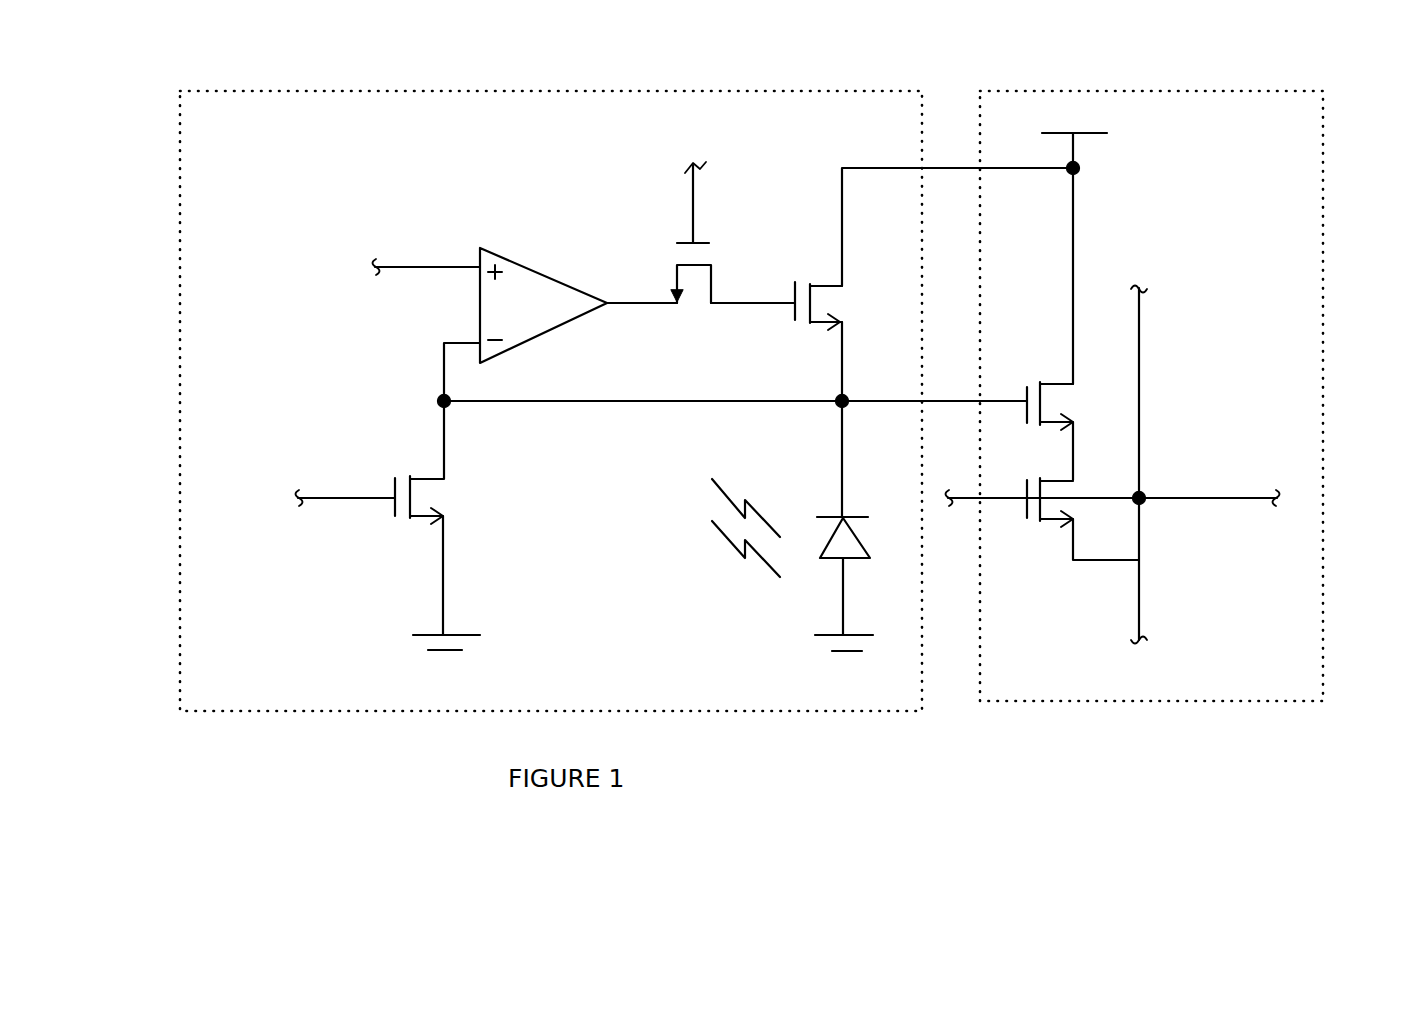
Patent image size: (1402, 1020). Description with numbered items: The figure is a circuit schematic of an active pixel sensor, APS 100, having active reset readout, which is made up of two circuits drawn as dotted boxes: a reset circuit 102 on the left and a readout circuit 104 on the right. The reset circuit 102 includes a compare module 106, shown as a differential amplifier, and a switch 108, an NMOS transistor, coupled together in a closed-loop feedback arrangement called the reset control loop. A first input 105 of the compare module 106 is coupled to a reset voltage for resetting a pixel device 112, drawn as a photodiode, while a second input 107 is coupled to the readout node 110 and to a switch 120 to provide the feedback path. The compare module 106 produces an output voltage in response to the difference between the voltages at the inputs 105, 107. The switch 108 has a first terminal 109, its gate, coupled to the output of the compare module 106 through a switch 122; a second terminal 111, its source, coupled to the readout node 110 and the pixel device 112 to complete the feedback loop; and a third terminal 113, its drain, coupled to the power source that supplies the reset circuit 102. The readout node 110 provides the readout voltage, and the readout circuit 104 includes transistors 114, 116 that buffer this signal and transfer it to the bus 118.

The APS 100 is at (742, 426).
The reset circuit 102 is at (180, 109).
The readout circuit 104 is at (1330, 117).
The first input 105 is at (399, 270).
The compare module 106 is at (559, 241).
The second input 107 is at (443, 371).
The switch 108 is at (830, 282).
The first terminal 109 is at (733, 310).
The readout node 110 is at (835, 401).
The second terminal 111 is at (845, 333).
The pixel device 112 is at (855, 560).
The third terminal 113 is at (845, 238).
The transistor 114 is at (1048, 378).
The transistor 116 is at (1040, 532).
The bus 118 is at (1142, 307).
The switch 120 is at (432, 475).
The switch 122 is at (678, 263).